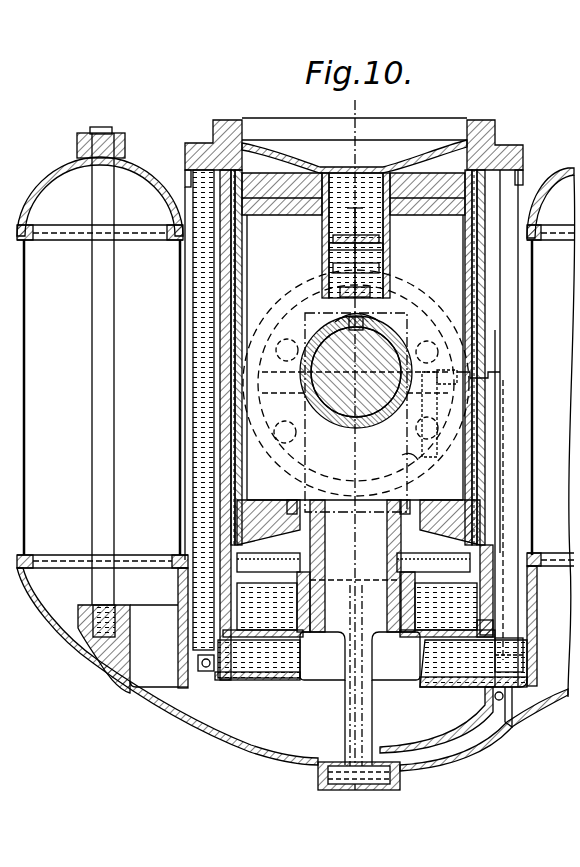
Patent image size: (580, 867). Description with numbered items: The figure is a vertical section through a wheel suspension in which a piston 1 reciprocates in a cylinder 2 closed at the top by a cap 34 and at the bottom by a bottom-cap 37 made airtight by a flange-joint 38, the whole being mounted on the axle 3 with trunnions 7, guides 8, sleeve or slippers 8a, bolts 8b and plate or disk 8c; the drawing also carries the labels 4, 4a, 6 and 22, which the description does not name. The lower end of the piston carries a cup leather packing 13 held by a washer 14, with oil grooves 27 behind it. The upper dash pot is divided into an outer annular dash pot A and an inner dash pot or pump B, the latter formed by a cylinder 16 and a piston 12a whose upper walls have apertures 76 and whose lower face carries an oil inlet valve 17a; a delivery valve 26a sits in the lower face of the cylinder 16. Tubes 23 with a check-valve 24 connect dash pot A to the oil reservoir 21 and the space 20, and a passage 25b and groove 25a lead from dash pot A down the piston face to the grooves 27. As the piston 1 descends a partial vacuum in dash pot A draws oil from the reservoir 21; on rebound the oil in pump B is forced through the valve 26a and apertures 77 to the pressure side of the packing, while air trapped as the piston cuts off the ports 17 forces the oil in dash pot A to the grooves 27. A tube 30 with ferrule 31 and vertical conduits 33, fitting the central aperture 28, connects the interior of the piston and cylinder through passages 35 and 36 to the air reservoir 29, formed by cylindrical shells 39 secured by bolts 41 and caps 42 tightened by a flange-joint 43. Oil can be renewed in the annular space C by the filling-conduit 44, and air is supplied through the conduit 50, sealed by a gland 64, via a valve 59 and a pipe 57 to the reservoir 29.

The piston 1 is at (248, 268).
The cylinder 2 is at (185, 153).
The axle 3 is at (372, 408).
The piston block 4 is at (355, 412).
The tank boss 4a is at (120, 636).
The key 6 is at (366, 324).
The trunnions 7 is at (280, 300).
The guides 8 is at (300, 440).
The sleeve or slippers 8a is at (315, 420).
The bolts 8b is at (432, 340).
The plate or disk 8c is at (370, 456).
The piston of the inner dash pot or pump 12a is at (340, 178).
The packing 13 is at (268, 563).
The washer 14 is at (433, 563).
The cylinder 16 is at (326, 251).
The air ports 17 is at (235, 185).
The oil inlet valve 17a is at (372, 256).
The space 20 is at (188, 586).
The oil reservoir 21 is at (262, 672).
The chamber 22 is at (420, 640).
The tube 23 is at (200, 301).
The check valve 24 is at (208, 675).
The groove 25a is at (248, 238).
The passage 25b is at (436, 198).
The delivery valve 26a is at (380, 278).
The oil grooves 27 is at (270, 531).
The aperture 28 is at (320, 540).
The air reservoir 29 is at (299, 433).
The tube 30 is at (425, 602).
The ferrule 31 is at (322, 513).
The vertical conduits 33 is at (312, 596).
The cap 34 is at (478, 120).
The passage 35 is at (176, 698).
The passage 36 is at (443, 738).
The bottom-cap 37 is at (262, 756).
The flange-joint 38 is at (490, 630).
The cylindrical shells 39 is at (179, 380).
The bolts 41 is at (112, 275).
The caps 42 is at (28, 201).
The flange-joint 43 is at (28, 236).
The filling-conduit 44 is at (367, 693).
The air duct or conduit 50 is at (442, 368).
The pipe 57 is at (503, 527).
The valve 59 is at (490, 372).
The gland 64 is at (403, 463).
The ports or apertures 76 is at (312, 192).
The apertures 77 is at (297, 316).
The outer annular dash pot A is at (215, 152).
The inner dash pot or pump B is at (376, 218).
The annular space C is at (357, 606).